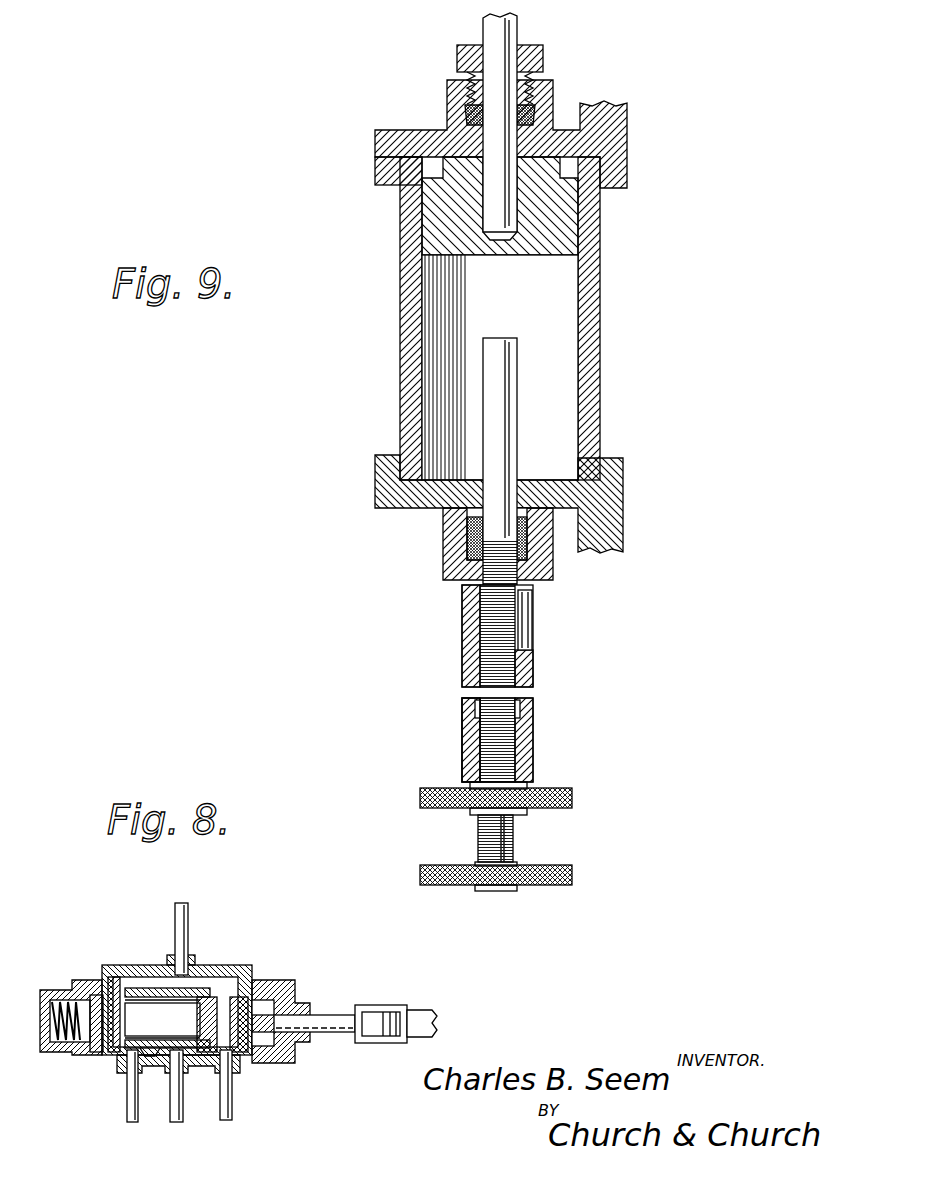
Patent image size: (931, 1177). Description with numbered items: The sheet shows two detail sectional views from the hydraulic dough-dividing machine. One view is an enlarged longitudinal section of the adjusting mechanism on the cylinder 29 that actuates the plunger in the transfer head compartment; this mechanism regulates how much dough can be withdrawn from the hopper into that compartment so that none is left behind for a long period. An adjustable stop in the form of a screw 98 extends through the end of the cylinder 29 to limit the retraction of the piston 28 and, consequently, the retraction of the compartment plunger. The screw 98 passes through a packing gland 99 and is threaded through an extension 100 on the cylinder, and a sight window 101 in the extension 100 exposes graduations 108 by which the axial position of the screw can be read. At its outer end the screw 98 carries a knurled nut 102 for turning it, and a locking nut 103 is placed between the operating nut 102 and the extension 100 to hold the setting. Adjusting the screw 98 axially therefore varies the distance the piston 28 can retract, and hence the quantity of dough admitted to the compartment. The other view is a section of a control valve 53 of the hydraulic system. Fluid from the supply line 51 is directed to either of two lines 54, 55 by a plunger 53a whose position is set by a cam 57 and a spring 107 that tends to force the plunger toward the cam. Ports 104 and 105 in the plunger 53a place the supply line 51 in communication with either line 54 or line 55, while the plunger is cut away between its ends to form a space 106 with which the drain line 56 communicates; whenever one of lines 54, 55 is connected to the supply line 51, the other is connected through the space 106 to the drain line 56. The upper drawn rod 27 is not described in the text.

In FIG. 9, the piston rod 27 is at (483, 32).
In FIG. 9, the piston 28 is at (600, 220).
In FIG. 9, the cylinder 29 is at (400, 380).
In FIG. 9, the packing gland 99 is at (445, 535).
In FIG. 9, the graduations 108 is at (480, 628).
In FIG. 9, the sight window 101 is at (533, 628).
In FIG. 9, the screw 98 is at (533, 716).
In FIG. 9, the extension 100 is at (462, 735).
In FIG. 9, the locking nut 103 is at (572, 798).
In FIG. 9, the knurled nut 102 is at (572, 875).
In FIG. 8, the supply line 51 is at (188, 908).
In FIG. 8, the spring 107 is at (48, 990).
In FIG. 8, the port 104 is at (108, 998).
In FIG. 8, the port 105 is at (236, 995).
In FIG. 8, the space 106 is at (150, 1050).
In FIG. 8, the line 54 is at (134, 1122).
In FIG. 8, the drain line 56 is at (182, 1122).
In FIG. 8, the line 55 is at (232, 1108).
In FIG. 8, the control valve 53 is at (255, 972).
In FIG. 8, the plunger 53a is at (338, 1014).
In FIG. 8, the cam 57 is at (437, 1018).